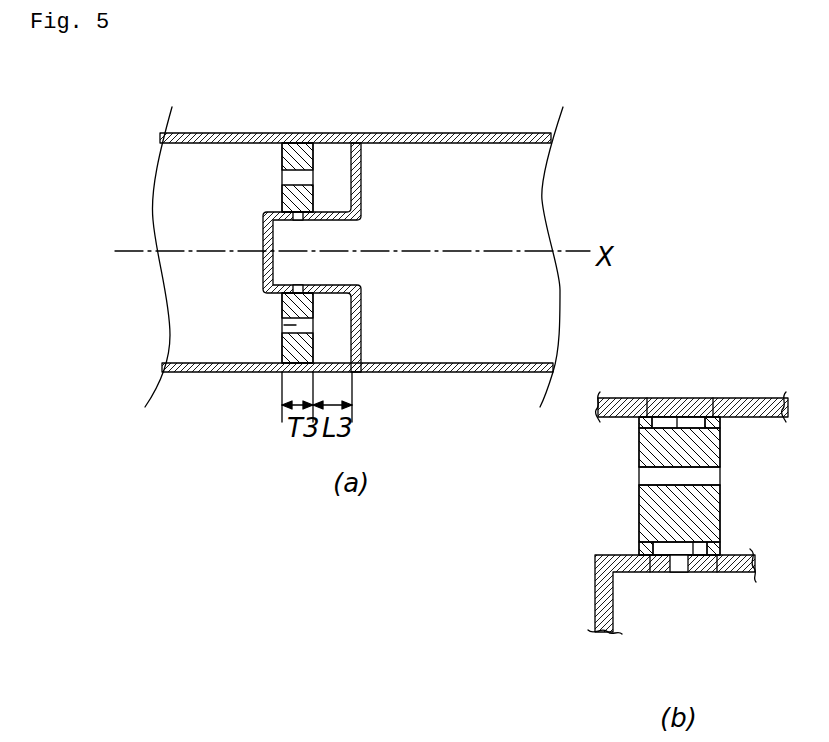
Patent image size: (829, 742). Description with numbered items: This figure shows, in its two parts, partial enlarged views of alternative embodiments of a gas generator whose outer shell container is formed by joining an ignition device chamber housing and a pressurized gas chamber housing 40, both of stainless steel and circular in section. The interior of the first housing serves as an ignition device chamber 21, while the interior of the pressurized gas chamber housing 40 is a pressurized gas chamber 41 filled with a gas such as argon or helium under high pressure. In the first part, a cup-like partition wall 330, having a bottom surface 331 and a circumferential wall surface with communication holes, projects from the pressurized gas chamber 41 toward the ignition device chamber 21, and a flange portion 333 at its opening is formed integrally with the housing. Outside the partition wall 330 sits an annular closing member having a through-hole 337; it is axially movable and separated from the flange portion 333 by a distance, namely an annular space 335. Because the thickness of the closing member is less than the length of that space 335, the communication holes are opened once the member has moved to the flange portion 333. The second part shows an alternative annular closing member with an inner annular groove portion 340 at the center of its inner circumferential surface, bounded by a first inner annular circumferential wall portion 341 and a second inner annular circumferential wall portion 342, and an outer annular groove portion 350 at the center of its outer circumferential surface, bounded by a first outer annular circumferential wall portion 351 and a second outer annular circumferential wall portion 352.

The ignition device chamber 21 is at (188, 213).
The pressurized gas chamber housing 40 is at (465, 133).
The pressurized gas chamber 41 is at (478, 213).
The partition wall 330 is at (362, 311).
The bottom surface 331 is at (263, 265).
The flange portion 333 is at (361, 190).
The distance (annular space) 335 is at (337, 160).
The through-hole 337 is at (283, 328).
The inner annular groove portion 340 is at (698, 573).
The first inner annular circumferential wall portion 341 is at (720, 573).
The second inner annular circumferential wall portion 342 is at (643, 572).
The outer annular groove portion 350 is at (683, 398).
The first outer annular circumferential wall portion 351 is at (715, 398).
The second outer annular circumferential wall portion 352 is at (642, 398).